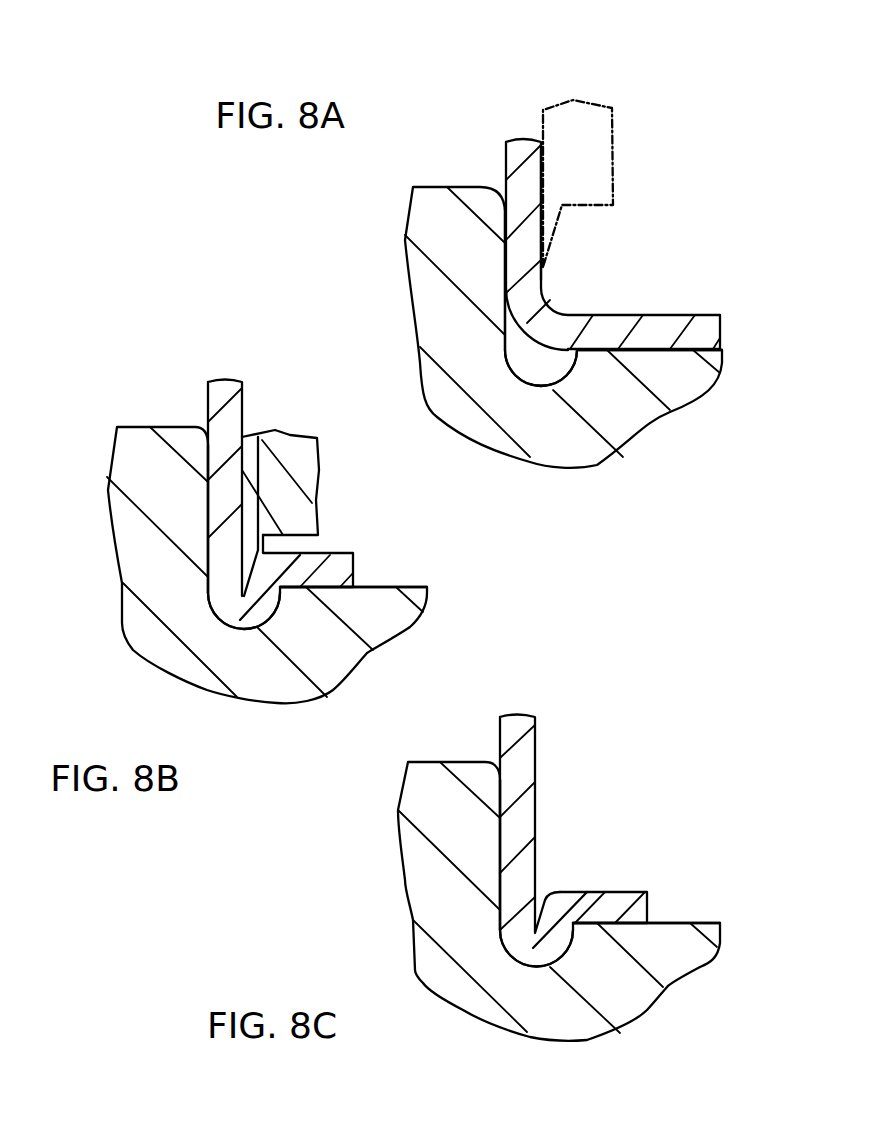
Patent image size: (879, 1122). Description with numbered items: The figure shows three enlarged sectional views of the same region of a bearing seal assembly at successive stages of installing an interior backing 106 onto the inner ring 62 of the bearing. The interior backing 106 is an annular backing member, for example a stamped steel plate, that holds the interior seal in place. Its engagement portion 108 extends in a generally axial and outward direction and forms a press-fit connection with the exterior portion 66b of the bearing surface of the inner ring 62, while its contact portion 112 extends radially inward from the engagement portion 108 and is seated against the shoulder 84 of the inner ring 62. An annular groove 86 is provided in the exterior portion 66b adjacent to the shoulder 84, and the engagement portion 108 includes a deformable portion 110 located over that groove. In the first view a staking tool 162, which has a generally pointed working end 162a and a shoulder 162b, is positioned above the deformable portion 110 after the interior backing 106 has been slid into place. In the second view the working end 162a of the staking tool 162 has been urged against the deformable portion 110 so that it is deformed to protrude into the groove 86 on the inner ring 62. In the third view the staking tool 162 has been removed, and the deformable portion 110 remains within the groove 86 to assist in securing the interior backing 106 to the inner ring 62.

In FIG. 8A, the inner ring 62 is at (607, 358).
In FIG. 8B, the inner ring 62 is at (219, 565).
In FIG. 8C, the inner ring 62 is at (494, 901).
In FIG. 8A, the exterior portion of bearing surface 66b is at (658, 350).
In FIG. 8B, the exterior portion of bearing surface 66b is at (307, 588).
In FIG. 8C, the exterior portion of bearing surface 66b is at (597, 923).
In FIG. 8A, the shoulder 84 is at (411, 289).
In FIG. 8B, the shoulder 84 is at (110, 519).
In FIG. 8C, the shoulder 84 is at (405, 867).
In FIG. 8A, the annular groove 86 is at (600, 451).
In FIG. 8B, the annular groove 86 is at (293, 652).
In FIG. 8C, the annular groove 86 is at (586, 989).
In FIG. 8A, the interior backing 106 is at (525, 244).
In FIG. 8B, the interior backing 106 is at (216, 458).
In FIG. 8C, the interior backing 106 is at (611, 778).
In FIG. 8A, the engagement portion 108 is at (644, 295).
In FIG. 8B, the engagement portion 108 is at (345, 539).
In FIG. 8C, the engagement portion 108 is at (641, 876).
In FIG. 8A, the deformable portion 110 is at (460, 384).
In FIG. 8B, the deformable portion 110 is at (197, 660).
In FIG. 8C, the deformable portion 110 is at (488, 996).
In FIG. 8A, the contact portion 112 is at (435, 244).
In FIG. 8B, the contact portion 112 is at (123, 488).
In FIG. 8C, the contact portion 112 is at (590, 824).
In FIG. 8A, the staking tool 162 is at (560, 149).
In FIG. 8B, the staking tool 162 is at (216, 434).
In FIG. 8A, the working end 162a is at (458, 189).
In FIG. 8B, the working end 162a is at (137, 532).
In FIG. 8A, the shoulder of staking tool 162b is at (644, 166).
In FIG. 8B, the shoulder of staking tool 162b is at (329, 482).